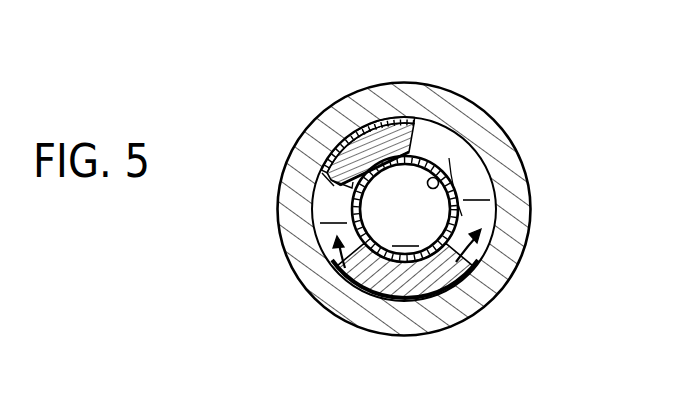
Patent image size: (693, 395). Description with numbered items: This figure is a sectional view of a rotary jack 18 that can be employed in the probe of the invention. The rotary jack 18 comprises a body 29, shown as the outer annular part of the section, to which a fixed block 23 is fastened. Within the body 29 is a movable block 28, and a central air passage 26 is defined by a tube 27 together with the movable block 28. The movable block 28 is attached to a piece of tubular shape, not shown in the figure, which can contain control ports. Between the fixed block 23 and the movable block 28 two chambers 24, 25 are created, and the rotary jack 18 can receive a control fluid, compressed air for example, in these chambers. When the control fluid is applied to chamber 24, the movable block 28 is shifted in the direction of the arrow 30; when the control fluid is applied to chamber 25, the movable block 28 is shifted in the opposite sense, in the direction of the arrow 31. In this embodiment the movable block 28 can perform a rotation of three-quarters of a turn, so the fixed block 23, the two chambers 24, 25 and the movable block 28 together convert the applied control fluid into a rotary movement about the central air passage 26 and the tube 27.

The rotary jack 18 is at (487, 95).
The fixed block 23 is at (415, 128).
The chamber 24 is at (476, 186).
The chamber 25 is at (333, 200).
The central air passage 26 is at (405, 209).
The tube 27 is at (442, 171).
The movable block 28 is at (462, 220).
The body 29 is at (519, 263).
The arrow 30 is at (335, 262).
The arrow 31 is at (483, 232).